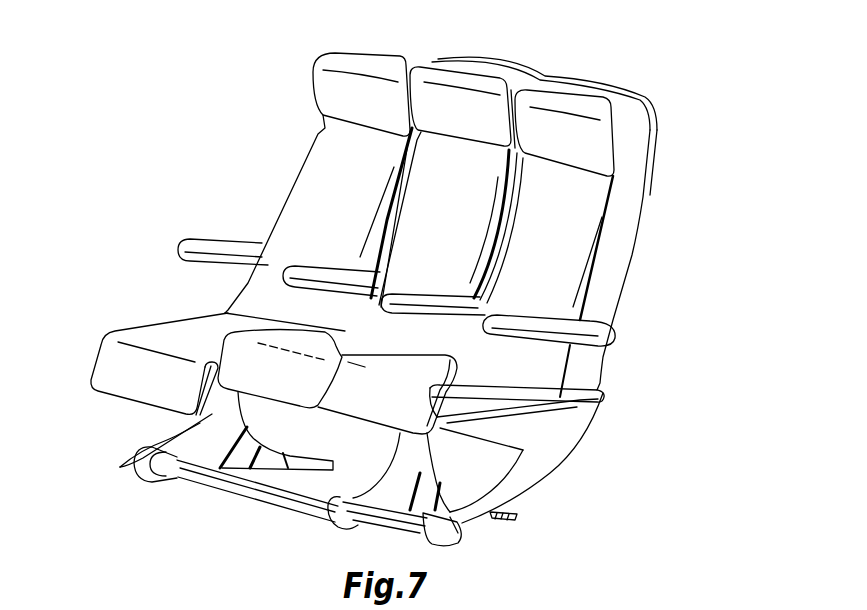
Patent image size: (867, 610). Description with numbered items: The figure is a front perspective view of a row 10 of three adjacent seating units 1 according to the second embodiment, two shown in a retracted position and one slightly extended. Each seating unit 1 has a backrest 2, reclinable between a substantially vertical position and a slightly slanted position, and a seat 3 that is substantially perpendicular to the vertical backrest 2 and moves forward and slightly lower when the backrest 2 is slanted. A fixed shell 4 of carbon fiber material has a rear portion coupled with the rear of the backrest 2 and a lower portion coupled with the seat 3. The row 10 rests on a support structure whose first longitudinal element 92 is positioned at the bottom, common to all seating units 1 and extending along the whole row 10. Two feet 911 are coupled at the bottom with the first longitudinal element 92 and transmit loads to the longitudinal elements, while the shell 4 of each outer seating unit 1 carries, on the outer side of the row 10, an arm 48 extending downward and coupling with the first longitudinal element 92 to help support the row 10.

The row 10 is at (227, 98).
The seating unit 1 is at (367, 51).
The backrest 2 is at (355, 188).
The seat 3 is at (172, 338).
The fixed shell 4 is at (633, 256).
The arm 48 is at (160, 437).
The feet 911 is at (135, 460).
The first longitudinal element 92 is at (280, 493).